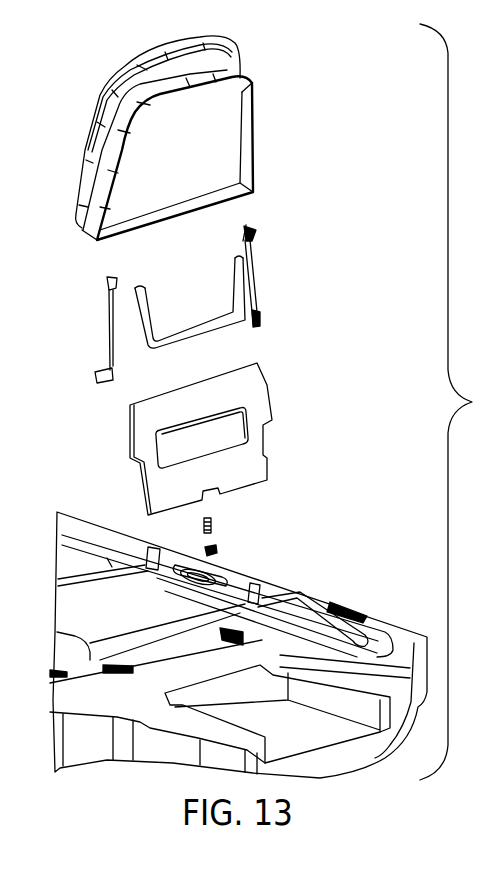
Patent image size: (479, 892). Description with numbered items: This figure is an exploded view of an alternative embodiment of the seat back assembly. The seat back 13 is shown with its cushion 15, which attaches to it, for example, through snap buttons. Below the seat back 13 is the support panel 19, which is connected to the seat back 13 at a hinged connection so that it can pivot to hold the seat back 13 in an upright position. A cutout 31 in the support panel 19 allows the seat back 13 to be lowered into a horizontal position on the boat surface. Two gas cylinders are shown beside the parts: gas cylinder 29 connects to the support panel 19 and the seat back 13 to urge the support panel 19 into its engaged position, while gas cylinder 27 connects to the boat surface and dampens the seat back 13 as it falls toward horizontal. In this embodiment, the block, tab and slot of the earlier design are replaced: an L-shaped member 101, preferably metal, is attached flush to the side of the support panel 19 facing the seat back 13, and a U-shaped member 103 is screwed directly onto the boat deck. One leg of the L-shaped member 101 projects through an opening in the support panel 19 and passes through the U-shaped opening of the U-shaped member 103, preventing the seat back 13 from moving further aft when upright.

The seat back 13 is at (252, 87).
The cushions 15 is at (205, 42).
The support panel 19 is at (267, 384).
The gas cylinder 27 is at (257, 259).
The gas cylinder 29 is at (107, 309).
The cutout 31 is at (230, 429).
The L-shaped member 101 is at (213, 521).
The U-shaped member 103 is at (218, 551).